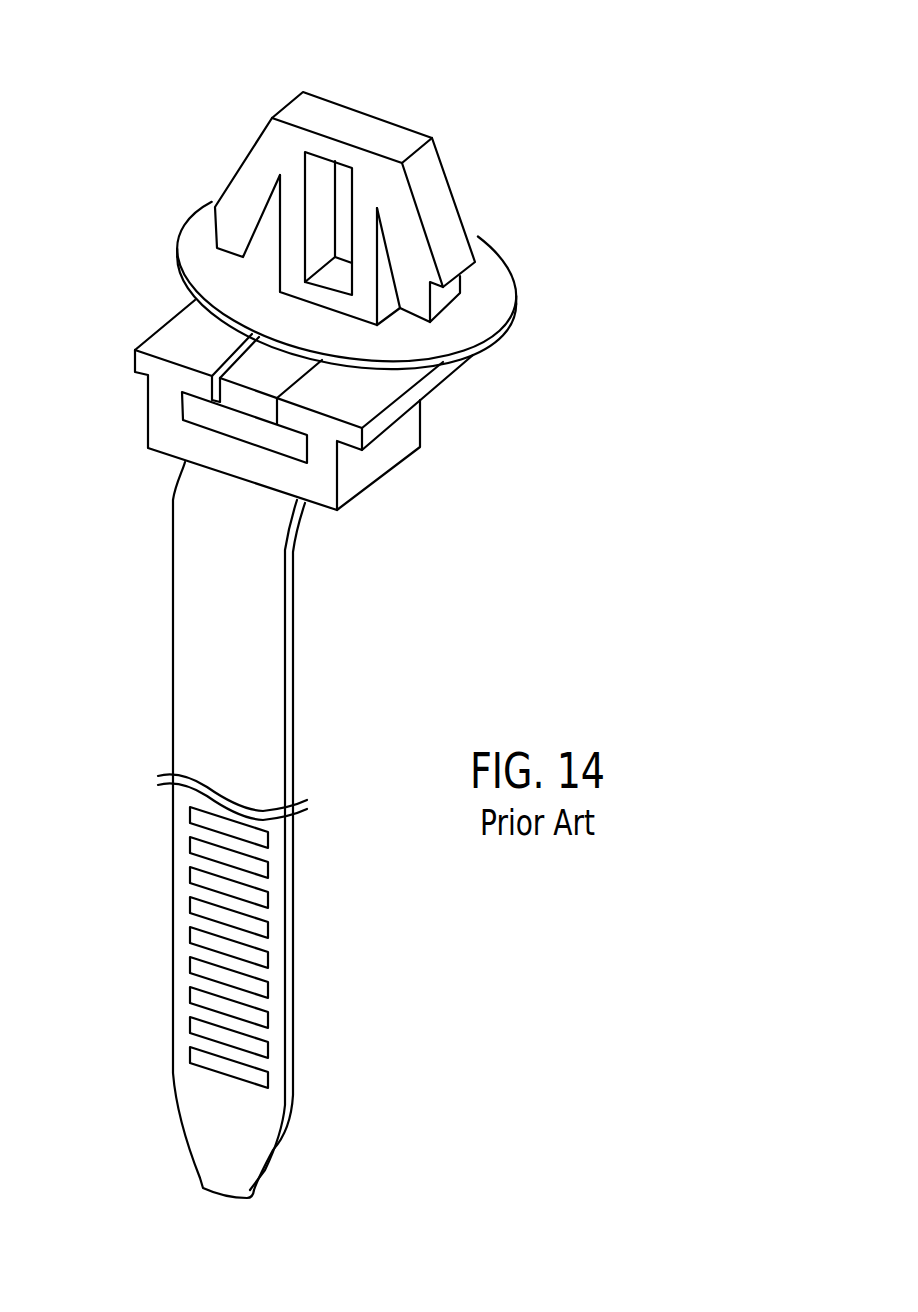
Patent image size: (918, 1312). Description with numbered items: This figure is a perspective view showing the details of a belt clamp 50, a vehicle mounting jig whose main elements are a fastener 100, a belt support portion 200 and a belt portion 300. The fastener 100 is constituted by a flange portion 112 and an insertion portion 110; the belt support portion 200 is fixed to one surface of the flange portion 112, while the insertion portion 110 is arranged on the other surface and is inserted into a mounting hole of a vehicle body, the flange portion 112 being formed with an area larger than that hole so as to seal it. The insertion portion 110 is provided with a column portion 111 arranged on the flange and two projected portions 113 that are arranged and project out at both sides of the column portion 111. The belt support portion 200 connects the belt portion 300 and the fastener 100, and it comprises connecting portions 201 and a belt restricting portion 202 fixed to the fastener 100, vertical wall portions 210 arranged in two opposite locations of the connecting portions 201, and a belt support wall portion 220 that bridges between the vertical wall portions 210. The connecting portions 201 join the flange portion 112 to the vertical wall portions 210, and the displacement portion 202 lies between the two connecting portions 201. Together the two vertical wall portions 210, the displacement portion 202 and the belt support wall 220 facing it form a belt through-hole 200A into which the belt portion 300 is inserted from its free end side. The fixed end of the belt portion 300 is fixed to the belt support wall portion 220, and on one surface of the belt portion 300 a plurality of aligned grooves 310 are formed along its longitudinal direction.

The belt clamp 50 is at (93, 72).
The fastener 100 is at (573, 138).
The insertion portion 110 is at (480, 138).
The column portion 111 is at (357, 234).
The flange portion 112 is at (503, 340).
The projected portions 113 is at (255, 153).
The belt support portion 200 is at (495, 393).
The belt through-hole 200A is at (205, 405).
The connecting portions 201 is at (418, 398).
The belt restricting portion 202 is at (247, 375).
The vertical wall portions 210 is at (160, 402).
The belt support wall portion 220 is at (247, 468).
The belt portion 300 is at (305, 633).
The grooves 310 is at (260, 840).